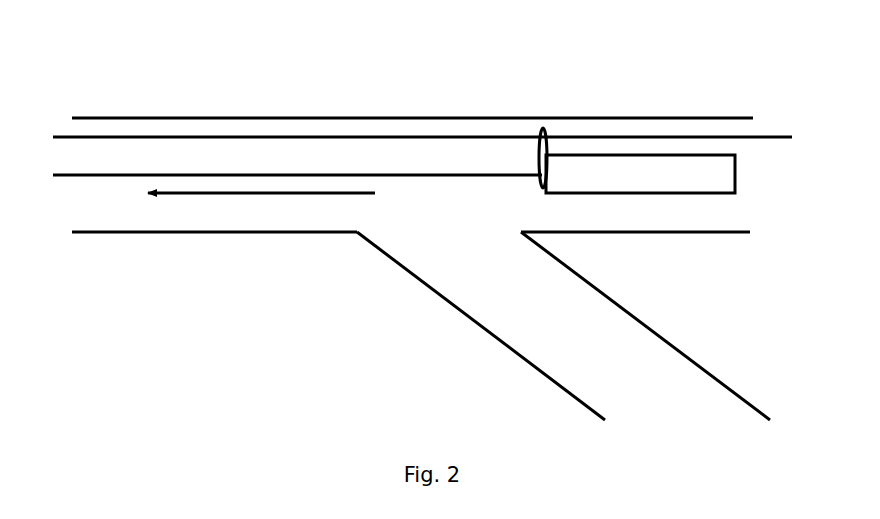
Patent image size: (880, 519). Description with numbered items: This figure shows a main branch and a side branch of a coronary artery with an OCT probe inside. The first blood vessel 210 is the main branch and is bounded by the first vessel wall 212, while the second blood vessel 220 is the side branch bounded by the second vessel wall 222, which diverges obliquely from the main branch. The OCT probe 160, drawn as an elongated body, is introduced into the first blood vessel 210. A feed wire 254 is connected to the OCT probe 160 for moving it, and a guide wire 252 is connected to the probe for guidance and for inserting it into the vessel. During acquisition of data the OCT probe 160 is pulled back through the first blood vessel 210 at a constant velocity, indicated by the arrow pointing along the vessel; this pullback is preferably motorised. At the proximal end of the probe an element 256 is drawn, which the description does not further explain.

The OCT probe 160 is at (666, 156).
The first blood vessel 210 is at (148, 250).
The first vessel wall 212 is at (268, 232).
The second blood vessel 220 is at (430, 345).
The second vessel wall 222 is at (500, 343).
The guide wire 252 is at (364, 137).
The feed wire 254 is at (268, 175).
The tube end ring 256 is at (552, 135).